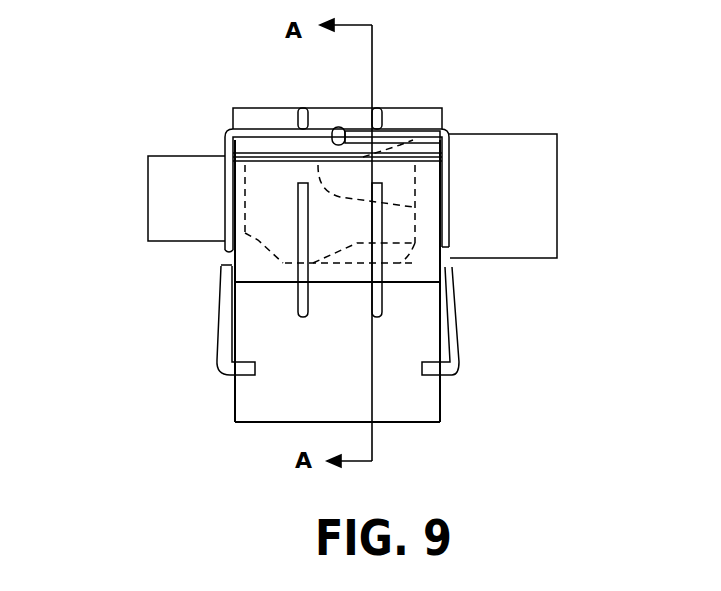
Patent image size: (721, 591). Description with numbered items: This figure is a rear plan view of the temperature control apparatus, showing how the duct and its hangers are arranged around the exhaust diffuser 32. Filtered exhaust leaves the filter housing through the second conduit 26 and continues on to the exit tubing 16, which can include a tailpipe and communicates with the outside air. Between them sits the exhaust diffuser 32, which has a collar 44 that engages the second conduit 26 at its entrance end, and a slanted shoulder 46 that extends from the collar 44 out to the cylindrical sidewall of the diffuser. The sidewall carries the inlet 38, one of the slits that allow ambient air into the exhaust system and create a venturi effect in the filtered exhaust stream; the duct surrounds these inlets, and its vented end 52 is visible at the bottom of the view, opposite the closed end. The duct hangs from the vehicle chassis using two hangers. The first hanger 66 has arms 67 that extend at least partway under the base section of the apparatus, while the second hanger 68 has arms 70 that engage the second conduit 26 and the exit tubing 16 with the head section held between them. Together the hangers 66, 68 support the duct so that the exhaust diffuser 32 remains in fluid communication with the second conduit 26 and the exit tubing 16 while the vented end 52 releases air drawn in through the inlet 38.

The exit tubing 16 is at (533, 170).
The second conduit 26 is at (181, 167).
The exhaust diffuser 32 is at (272, 173).
The inlet 38 is at (403, 253).
The collar 44 is at (228, 242).
The slanted shoulder 46 is at (225, 268).
The vented end 52 is at (273, 413).
The first hanger 66 is at (455, 363).
The arms 67 is at (232, 317).
The second hanger 68 is at (446, 127).
The arms 70 is at (230, 188).